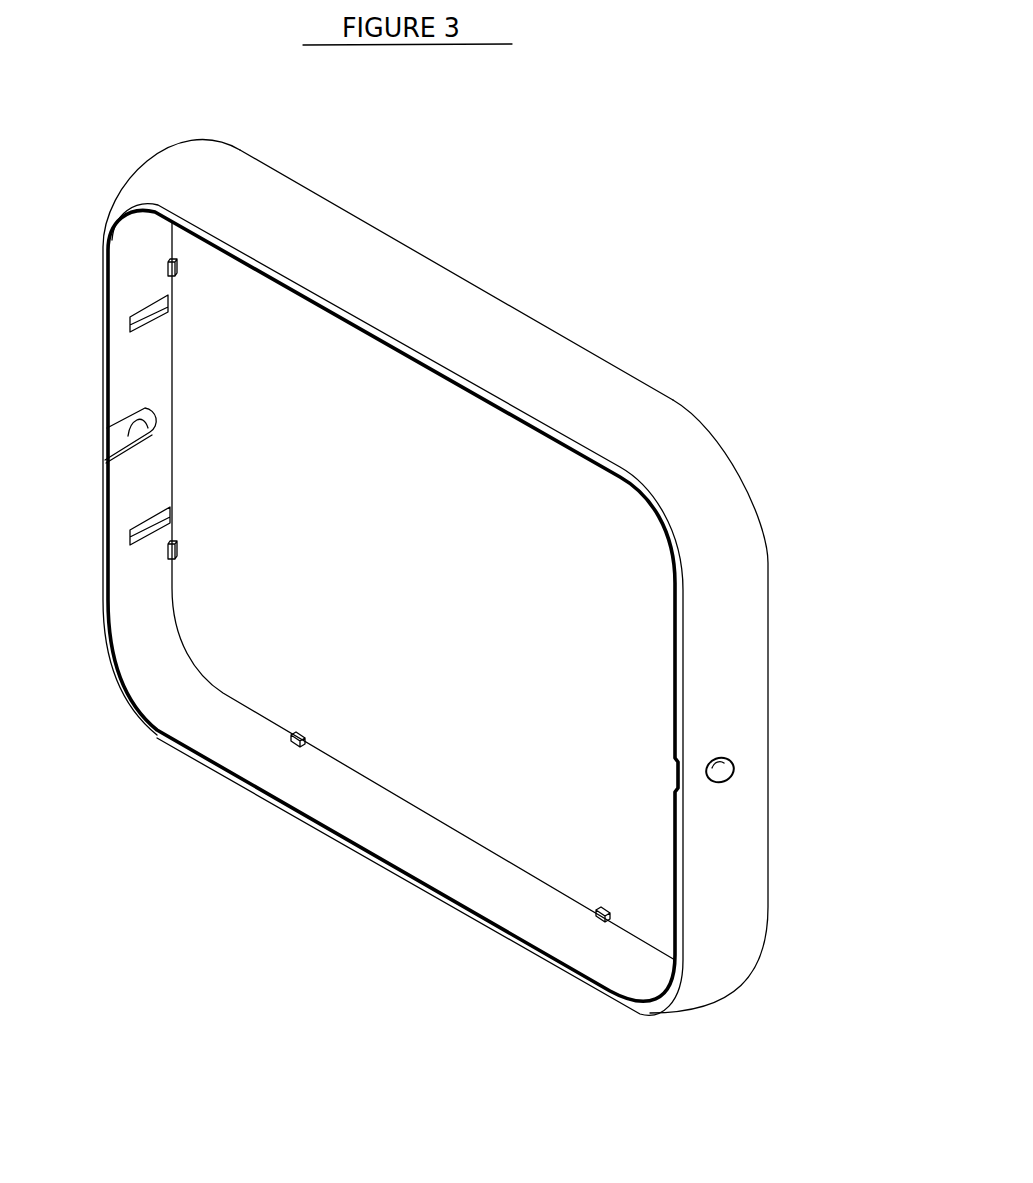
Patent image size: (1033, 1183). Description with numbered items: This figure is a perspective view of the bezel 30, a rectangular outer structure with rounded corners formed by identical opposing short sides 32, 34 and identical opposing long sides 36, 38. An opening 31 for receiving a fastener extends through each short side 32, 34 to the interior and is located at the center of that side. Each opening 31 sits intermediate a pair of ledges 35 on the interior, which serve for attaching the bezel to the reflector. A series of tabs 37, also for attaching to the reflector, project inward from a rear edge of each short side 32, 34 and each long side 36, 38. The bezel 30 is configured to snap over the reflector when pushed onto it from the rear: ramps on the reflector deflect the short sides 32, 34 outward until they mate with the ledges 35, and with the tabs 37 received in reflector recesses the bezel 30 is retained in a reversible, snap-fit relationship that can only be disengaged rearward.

The bezel 30 is at (636, 186).
The opening 31 is at (133, 424).
The short side 32 is at (750, 805).
The short side 34 is at (142, 488).
The ledges 35 is at (133, 318).
The long side 36 is at (440, 292).
The tabs 37 is at (180, 270).
The long side 38 is at (420, 843).